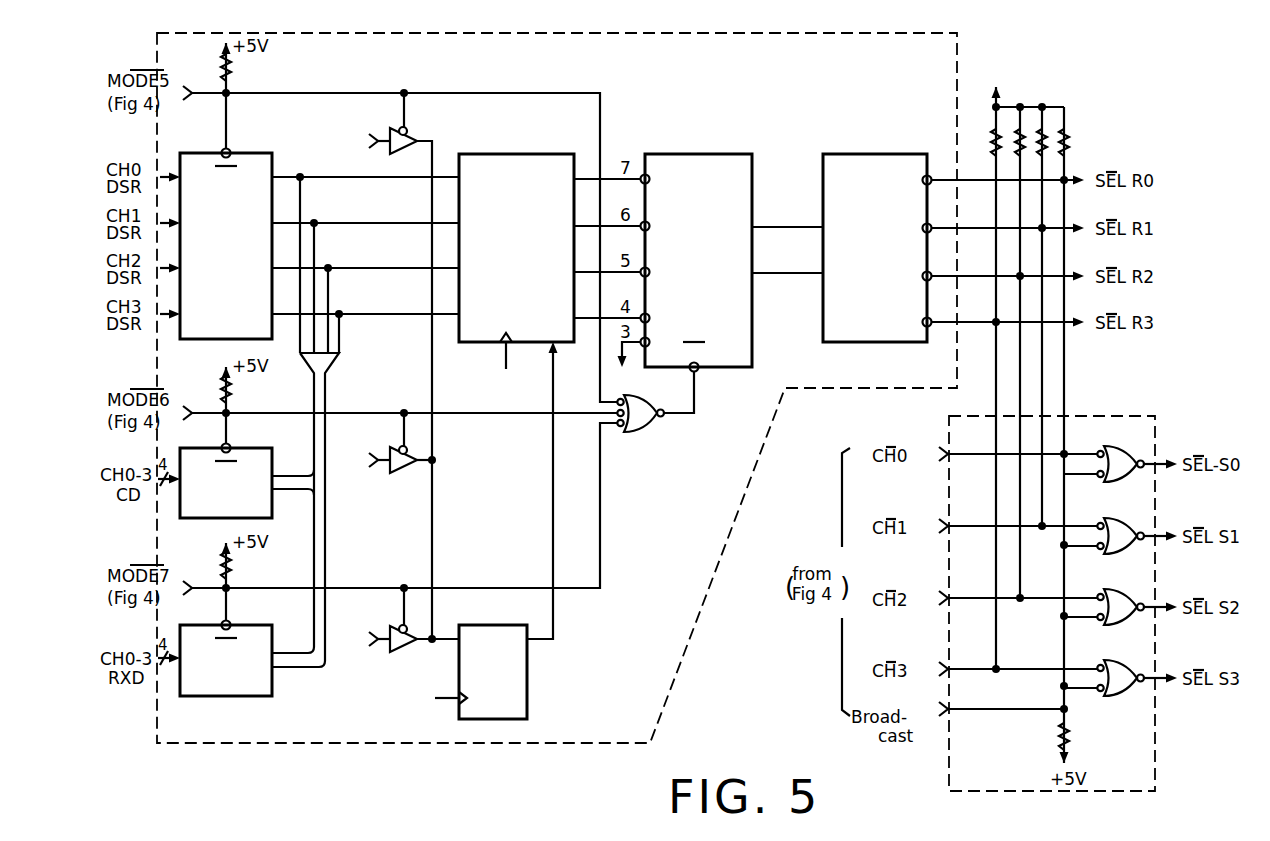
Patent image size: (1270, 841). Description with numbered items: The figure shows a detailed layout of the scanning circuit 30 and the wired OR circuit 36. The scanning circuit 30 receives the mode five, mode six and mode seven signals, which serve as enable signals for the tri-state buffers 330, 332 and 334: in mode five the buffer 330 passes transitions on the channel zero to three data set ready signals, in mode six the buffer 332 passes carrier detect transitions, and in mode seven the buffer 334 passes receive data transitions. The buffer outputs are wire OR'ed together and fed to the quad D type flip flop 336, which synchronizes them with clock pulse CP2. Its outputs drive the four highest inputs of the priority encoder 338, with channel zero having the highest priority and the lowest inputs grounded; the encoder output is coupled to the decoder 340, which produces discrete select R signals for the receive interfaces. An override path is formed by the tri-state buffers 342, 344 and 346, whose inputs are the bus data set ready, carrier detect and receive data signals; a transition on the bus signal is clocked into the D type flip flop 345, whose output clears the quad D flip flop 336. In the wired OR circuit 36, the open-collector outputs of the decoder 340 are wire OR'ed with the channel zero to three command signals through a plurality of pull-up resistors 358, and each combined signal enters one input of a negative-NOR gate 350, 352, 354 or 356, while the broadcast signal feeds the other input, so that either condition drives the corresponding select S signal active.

The scanning circuit 30 is at (688, 645).
The wired OR circuit 36 is at (1100, 416).
The tri-state buffer 330 is at (236, 153).
The tri-state buffer 332 is at (236, 448).
The tri-state buffer 334 is at (236, 625).
The quad D type flip flop 336 is at (530, 152).
The priority encoder 338 is at (712, 152).
The decoder 340 is at (888, 152).
The tri-state buffer 342 is at (420, 130).
The tri-state buffer 344 is at (406, 474).
The D type flip flop 345 is at (511, 530).
The tri-state buffer 346 is at (406, 653).
The negative-NOR gate 350 is at (1136, 432).
The negative-NOR gate 352 is at (1136, 504).
The negative-NOR gate 354 is at (1136, 575).
The negative-NOR gate 356 is at (1136, 646).
The pull-up resistors 358 is at (1072, 142).